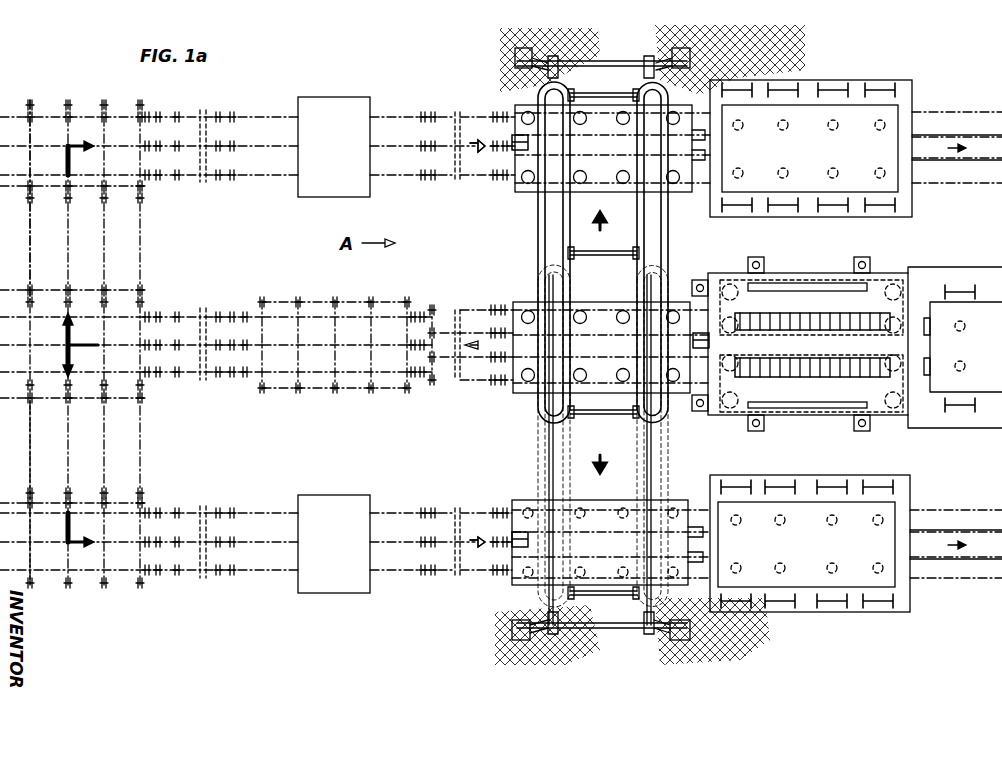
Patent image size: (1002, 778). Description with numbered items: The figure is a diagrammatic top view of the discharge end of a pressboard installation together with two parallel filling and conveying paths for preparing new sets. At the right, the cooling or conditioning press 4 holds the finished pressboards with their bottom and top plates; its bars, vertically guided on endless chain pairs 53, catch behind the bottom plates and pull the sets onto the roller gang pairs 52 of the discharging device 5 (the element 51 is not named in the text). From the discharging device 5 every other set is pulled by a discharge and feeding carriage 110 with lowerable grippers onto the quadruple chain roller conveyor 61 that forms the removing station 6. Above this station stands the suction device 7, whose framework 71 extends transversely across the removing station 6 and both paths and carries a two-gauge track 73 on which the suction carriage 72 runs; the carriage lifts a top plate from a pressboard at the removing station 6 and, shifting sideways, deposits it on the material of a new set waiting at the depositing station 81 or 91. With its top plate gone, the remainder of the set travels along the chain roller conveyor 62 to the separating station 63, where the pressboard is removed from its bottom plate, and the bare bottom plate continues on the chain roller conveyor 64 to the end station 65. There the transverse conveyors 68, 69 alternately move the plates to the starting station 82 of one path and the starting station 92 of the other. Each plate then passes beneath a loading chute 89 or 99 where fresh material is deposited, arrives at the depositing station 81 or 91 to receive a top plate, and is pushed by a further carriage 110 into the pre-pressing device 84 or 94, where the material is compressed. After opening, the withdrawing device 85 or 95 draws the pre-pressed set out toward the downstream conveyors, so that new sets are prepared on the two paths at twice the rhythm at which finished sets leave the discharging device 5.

The cooling or conditioning press 4 is at (973, 242).
The discharging device 5 is at (800, 340).
The removing station 6 is at (672, 300).
The suction device 7 is at (536, 250).
The guide bar 51 is at (838, 285).
The roller gang pair 52 is at (835, 375).
The endless chain pair 53 is at (790, 410).
The chain roller conveyor 61 is at (532, 348).
The chain roller conveyor 62 is at (452, 378).
The separating station 63 is at (315, 367).
The chain roller conveyor 64 is at (192, 360).
The end station 65 is at (128, 325).
The transverse conveyor 68 is at (128, 448).
The transverse conveyor 69 is at (135, 235).
The framework 71 is at (610, 62).
The suction carriage 72 is at (580, 205).
The two-gauge track 73 is at (650, 480).
The depositing station 81 is at (495, 548).
The starting station 82 is at (88, 575).
The pre-pressing device 84 is at (808, 605).
The withdrawing device 85 is at (962, 582).
The loading chute 89 is at (333, 585).
The depositing station 91 is at (490, 138).
The starting station 92 is at (48, 112).
The pre-pressing device 94 is at (833, 80).
The withdrawing device 95 is at (962, 108).
The loading chute 99 is at (340, 100).
The discharge and feeding carriage 110 is at (512, 138).